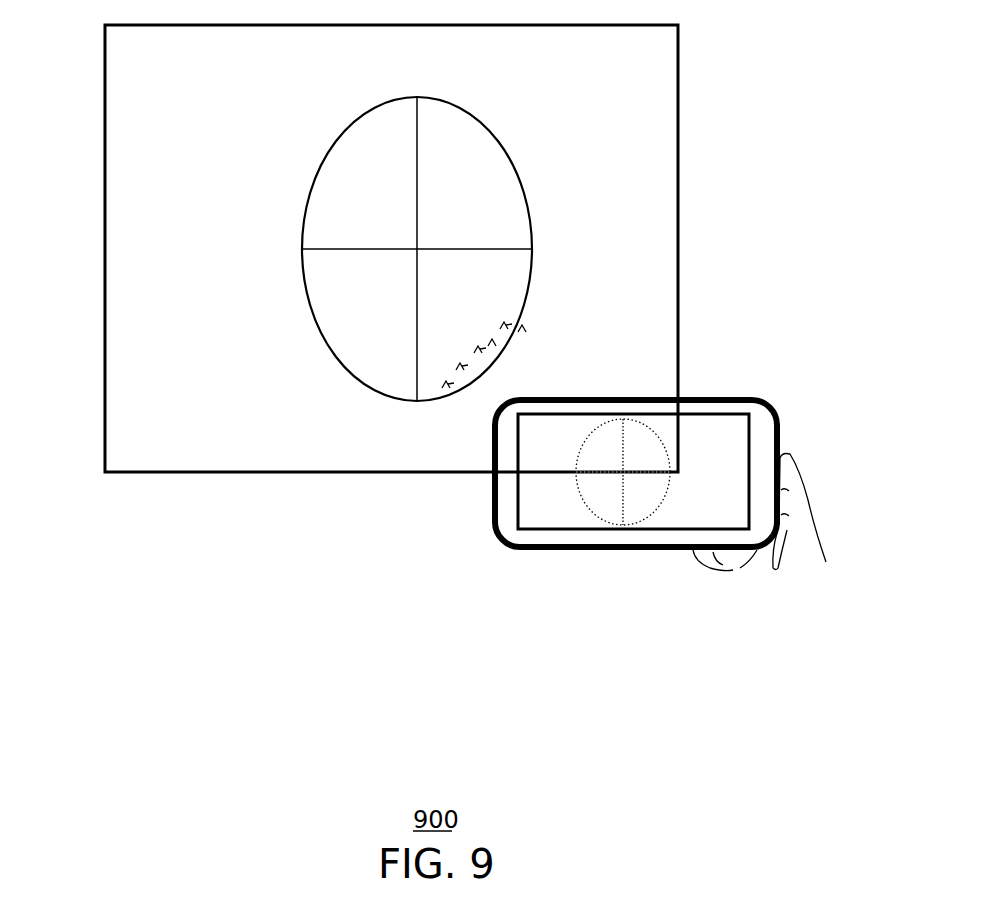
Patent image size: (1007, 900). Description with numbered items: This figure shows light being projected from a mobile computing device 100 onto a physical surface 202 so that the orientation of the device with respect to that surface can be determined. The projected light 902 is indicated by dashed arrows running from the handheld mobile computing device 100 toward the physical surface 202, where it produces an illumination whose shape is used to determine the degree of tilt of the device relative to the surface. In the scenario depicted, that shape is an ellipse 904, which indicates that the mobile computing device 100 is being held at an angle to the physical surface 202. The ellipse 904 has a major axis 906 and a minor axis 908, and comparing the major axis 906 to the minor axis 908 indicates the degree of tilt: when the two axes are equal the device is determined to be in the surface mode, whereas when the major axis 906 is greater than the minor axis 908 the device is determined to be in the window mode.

The mobile computing device 100 is at (492, 528).
The physical surface 202 is at (638, 203).
The projected light 902 is at (480, 403).
The ellipse 904 is at (493, 130).
The major axis 906 is at (417, 190).
The minor axis 908 is at (380, 250).